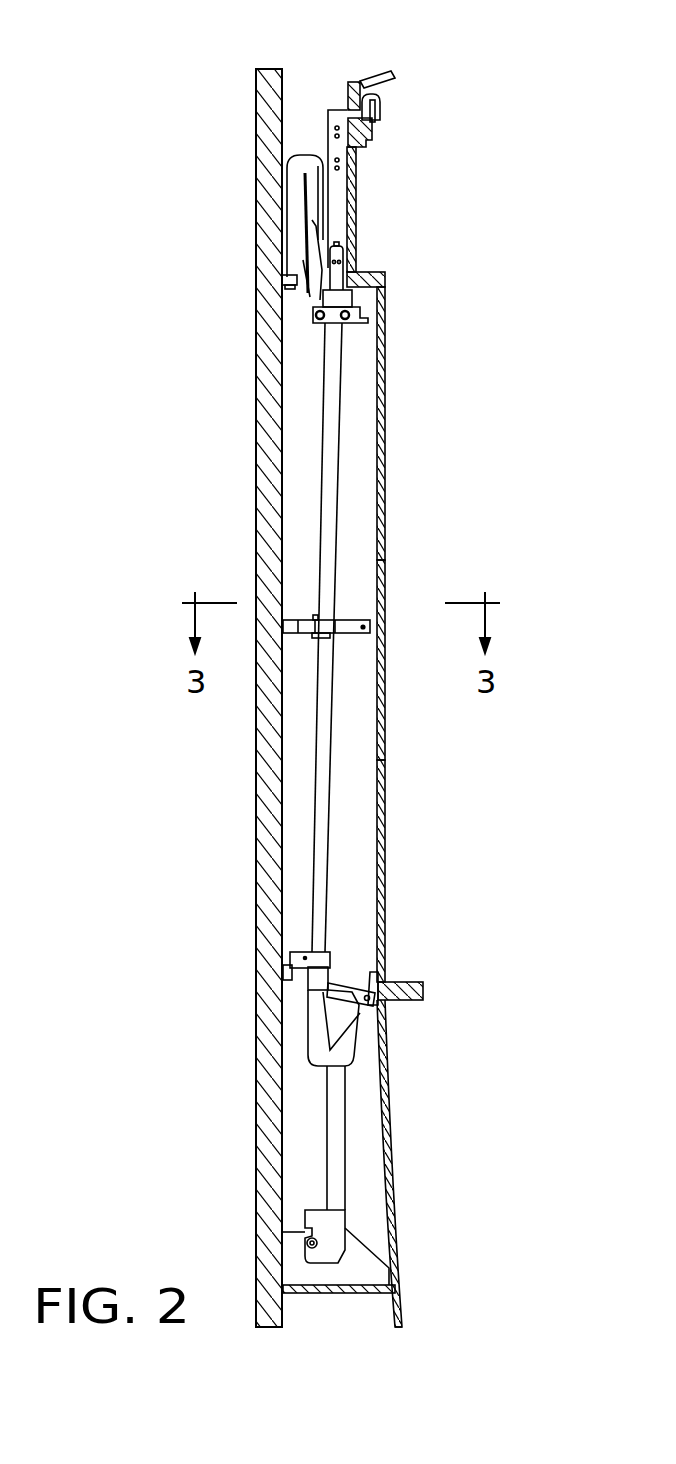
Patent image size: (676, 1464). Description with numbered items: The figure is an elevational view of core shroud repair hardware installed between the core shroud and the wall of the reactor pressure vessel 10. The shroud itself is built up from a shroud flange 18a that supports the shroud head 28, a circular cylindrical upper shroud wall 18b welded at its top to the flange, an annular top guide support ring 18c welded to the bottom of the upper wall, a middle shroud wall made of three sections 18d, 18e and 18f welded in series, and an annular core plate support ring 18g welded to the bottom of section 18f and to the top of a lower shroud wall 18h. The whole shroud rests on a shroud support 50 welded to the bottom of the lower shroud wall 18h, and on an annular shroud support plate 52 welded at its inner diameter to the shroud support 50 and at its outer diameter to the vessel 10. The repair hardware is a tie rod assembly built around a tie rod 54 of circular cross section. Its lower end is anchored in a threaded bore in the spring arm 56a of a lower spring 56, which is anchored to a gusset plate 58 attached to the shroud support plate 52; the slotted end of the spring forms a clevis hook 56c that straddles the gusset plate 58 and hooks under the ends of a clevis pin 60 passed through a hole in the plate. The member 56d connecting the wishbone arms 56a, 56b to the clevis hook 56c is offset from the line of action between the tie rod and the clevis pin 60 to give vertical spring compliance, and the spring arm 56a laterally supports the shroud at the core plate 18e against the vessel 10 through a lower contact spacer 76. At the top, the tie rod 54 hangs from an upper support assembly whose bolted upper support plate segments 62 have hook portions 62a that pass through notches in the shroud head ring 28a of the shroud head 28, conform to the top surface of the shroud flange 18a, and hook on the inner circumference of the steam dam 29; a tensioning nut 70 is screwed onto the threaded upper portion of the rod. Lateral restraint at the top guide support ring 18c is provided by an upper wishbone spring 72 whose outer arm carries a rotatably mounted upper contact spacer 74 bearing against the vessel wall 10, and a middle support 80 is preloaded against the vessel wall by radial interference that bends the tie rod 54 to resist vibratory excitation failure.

The reactor pressure vessel 10 is at (257, 541).
The shroud flange 18a is at (372, 133).
The upper shroud wall 18b is at (357, 217).
The top guide support ring 18c is at (386, 278).
The middle shroud wall section 18d is at (386, 437).
The middle shroud wall section 18e is at (385, 703).
The middle shroud wall section 18f is at (385, 808).
The core plate support ring 18g is at (405, 1002).
The lower shroud wall 18h is at (394, 1160).
The shroud head 28 is at (372, 64).
The shroud head ring 28a is at (350, 95).
The steam dam 29 is at (375, 112).
The shroud support 50 is at (400, 1268).
The shroud support plate 52 is at (333, 1294).
The tie rod 54 is at (313, 797).
The lower spring 56 is at (312, 1154).
The spring arm 56a is at (305, 1029).
The spring arm 56b is at (357, 1020).
The clevis hook 56c is at (337, 1219).
The connecting member 56d is at (338, 1112).
The gusset plate 58 is at (293, 1232).
The clevis pin 60 is at (307, 1243).
The upper support plate 62 is at (330, 140).
The hook portion 62a is at (380, 102).
The tensioning nut 70 is at (350, 294).
The upper spring 72 is at (297, 165).
The upper contact spacer 74 is at (283, 280).
The lower contact spacer 76 is at (300, 945).
The middle support 80 is at (350, 616).